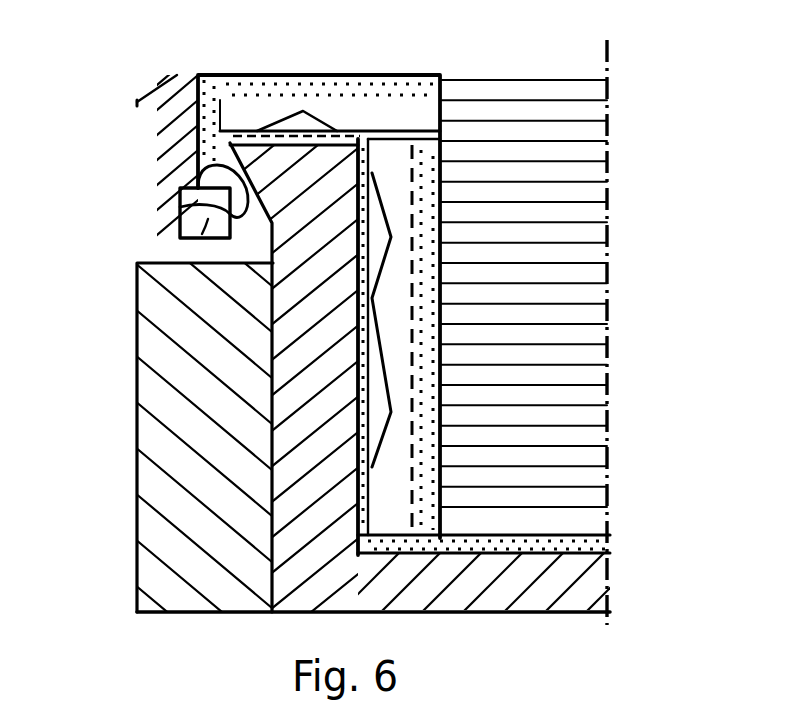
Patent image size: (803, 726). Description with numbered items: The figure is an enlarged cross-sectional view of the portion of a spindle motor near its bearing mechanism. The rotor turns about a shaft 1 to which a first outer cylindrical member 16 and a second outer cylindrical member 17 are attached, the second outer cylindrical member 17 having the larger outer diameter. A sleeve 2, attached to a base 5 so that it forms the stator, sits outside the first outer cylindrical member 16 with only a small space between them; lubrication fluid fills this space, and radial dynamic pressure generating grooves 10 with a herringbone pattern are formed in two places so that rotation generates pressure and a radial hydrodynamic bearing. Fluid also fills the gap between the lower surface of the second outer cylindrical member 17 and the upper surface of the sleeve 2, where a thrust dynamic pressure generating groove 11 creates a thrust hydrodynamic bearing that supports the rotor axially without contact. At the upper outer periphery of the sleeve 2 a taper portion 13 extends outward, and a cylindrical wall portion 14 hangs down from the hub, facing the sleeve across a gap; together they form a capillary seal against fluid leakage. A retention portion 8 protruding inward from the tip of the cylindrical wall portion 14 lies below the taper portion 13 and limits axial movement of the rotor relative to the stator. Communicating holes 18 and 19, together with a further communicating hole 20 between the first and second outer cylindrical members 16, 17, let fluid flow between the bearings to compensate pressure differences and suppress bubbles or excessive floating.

The shaft 1 is at (573, 463).
The sleeve 2 is at (305, 447).
The base 5 is at (192, 547).
The retention portion 8 is at (199, 238).
The radial dynamic pressure generating grooves 10 is at (391, 237).
The thrust dynamic pressure generating groove 11 is at (290, 127).
The taper portion 13 is at (180, 207).
The cylindrical wall portion 14 is at (170, 149).
The first outer cylindrical member 16 is at (397, 382).
The second outer cylindrical member 17 is at (397, 108).
The communicating hole 18 is at (432, 220).
The communicating hole 19 is at (298, 75).
The communicating hole 20 is at (447, 138).